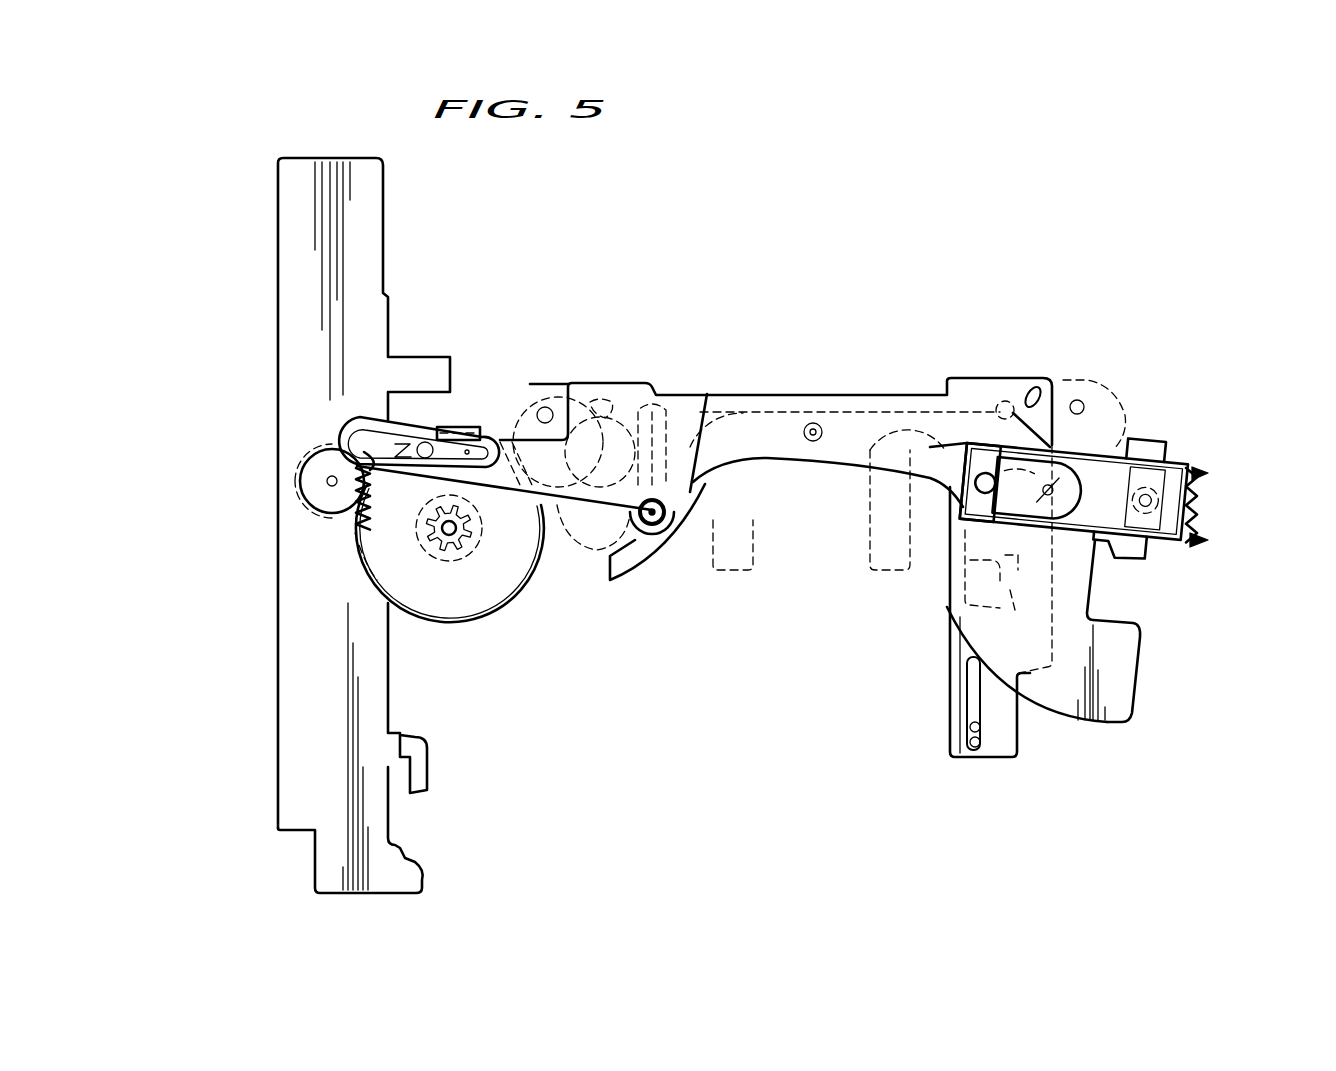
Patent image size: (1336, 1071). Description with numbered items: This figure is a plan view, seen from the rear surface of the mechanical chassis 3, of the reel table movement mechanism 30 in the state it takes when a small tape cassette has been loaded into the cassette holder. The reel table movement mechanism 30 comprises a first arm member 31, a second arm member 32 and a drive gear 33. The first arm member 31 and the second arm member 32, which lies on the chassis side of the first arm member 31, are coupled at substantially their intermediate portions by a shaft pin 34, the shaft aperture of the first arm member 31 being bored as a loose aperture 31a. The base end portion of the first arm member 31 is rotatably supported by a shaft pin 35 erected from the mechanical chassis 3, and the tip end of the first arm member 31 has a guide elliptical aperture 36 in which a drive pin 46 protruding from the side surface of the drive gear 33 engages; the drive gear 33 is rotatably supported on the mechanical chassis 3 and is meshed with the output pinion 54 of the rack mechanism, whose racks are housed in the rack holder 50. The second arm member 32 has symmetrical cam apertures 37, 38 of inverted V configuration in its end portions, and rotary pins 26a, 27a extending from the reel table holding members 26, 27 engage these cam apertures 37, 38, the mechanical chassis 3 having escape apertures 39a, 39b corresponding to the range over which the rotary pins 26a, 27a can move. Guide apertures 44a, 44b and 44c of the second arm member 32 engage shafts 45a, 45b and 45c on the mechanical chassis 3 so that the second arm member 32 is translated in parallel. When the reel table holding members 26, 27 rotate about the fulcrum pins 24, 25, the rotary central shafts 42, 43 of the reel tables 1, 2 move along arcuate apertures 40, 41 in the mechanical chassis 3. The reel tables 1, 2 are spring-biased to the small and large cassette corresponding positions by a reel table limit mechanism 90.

The reel table 1 is at (893, 450).
The reel table 2 is at (742, 412).
The mechanical chassis 3 is at (823, 802).
The fulcrum pin 24 is at (1082, 401).
The fulcrum pin 25 is at (547, 410).
The reel table holding member 26 is at (1087, 380).
The rotary pin 26a is at (1005, 400).
The reel table holding member 27 is at (549, 384).
The rotary pin 27a is at (620, 383).
The reel table movement mechanism 30 is at (821, 356).
The first arm member 31 is at (872, 393).
The loose aperture 31a is at (812, 423).
The second arm member 32 is at (968, 377).
The drive gear 33 is at (354, 522).
The shaft pin 34 is at (816, 442).
The shaft pin 35 is at (1140, 502).
The guide elliptical aperture 36 is at (478, 427).
The cam aperture 37 is at (1040, 378).
The cam aperture 38 is at (596, 395).
The escape aperture 39a is at (1040, 440).
The escape aperture 39b is at (449, 554).
The arcuate aperture 40 is at (1043, 601).
The arcuate aperture 41 is at (708, 495).
The rotary central shaft 42 is at (917, 565).
The rotary central shaft 43 is at (735, 445).
The guide aperture 44a is at (652, 396).
The guide aperture 44b is at (943, 390).
The guide aperture 44c is at (970, 690).
The shaft 45a is at (770, 527).
The shaft 45b is at (970, 592).
The shaft 45c is at (977, 735).
The drive pin 46 is at (437, 427).
The rack holder 50 is at (278, 669).
The output pinion 54 is at (299, 480).
The reel table limit mechanism 90 is at (1162, 426).